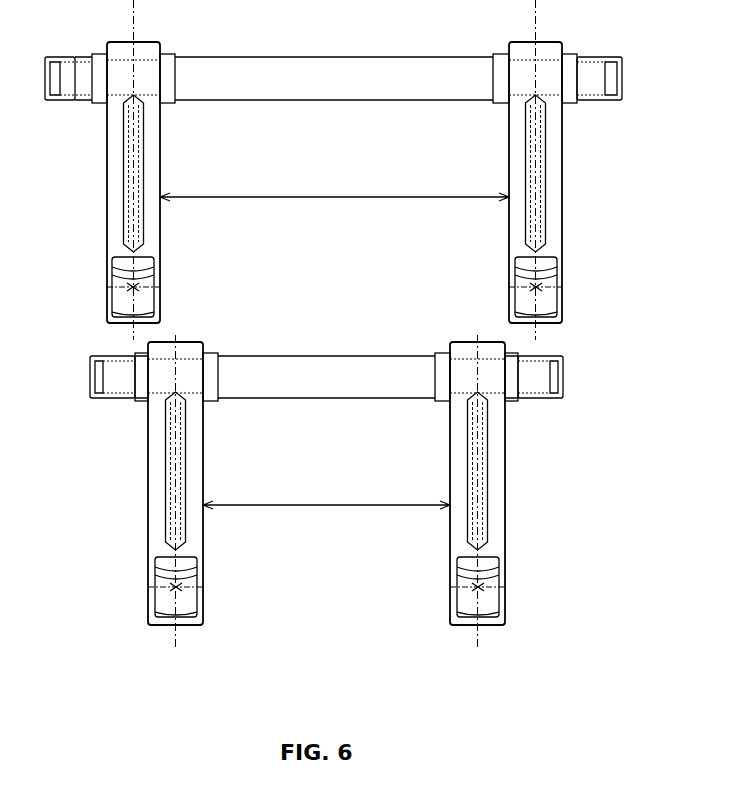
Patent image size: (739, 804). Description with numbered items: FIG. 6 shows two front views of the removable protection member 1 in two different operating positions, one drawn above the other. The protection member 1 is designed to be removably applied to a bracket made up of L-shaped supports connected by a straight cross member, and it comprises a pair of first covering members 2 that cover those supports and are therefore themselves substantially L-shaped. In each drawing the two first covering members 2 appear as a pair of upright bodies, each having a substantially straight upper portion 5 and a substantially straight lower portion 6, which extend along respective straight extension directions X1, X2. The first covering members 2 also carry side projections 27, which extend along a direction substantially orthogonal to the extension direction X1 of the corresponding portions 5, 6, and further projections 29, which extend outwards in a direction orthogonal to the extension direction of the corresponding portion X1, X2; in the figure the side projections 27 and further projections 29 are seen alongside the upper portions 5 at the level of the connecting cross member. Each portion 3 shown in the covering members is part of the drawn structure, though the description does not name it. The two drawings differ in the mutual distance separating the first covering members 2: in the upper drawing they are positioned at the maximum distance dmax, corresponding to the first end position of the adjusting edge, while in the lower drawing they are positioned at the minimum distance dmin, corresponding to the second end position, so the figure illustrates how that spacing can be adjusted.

The protection member 1 is at (628, 141).
The first covering member 2 is at (334, 333).
The slot 3 is at (120, 220).
The upper portion 5 is at (107, 190).
The lower portion 6 is at (115, 298).
The side projections 27 is at (167, 48).
The further projections 29 is at (100, 46).
The extension direction X1 is at (137, 28).
The extension direction X2 is at (150, 298).
The maximum distance dmax is at (346, 196).
The minimum distance dmin is at (344, 504).